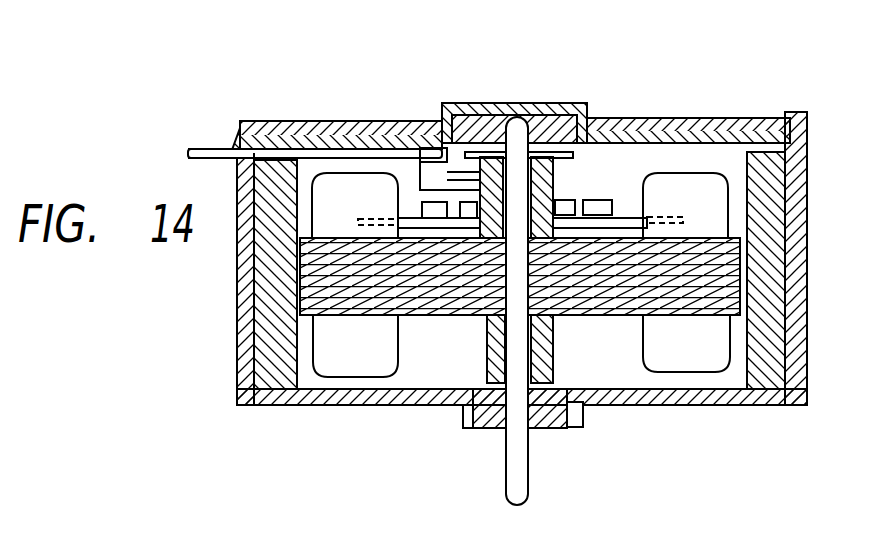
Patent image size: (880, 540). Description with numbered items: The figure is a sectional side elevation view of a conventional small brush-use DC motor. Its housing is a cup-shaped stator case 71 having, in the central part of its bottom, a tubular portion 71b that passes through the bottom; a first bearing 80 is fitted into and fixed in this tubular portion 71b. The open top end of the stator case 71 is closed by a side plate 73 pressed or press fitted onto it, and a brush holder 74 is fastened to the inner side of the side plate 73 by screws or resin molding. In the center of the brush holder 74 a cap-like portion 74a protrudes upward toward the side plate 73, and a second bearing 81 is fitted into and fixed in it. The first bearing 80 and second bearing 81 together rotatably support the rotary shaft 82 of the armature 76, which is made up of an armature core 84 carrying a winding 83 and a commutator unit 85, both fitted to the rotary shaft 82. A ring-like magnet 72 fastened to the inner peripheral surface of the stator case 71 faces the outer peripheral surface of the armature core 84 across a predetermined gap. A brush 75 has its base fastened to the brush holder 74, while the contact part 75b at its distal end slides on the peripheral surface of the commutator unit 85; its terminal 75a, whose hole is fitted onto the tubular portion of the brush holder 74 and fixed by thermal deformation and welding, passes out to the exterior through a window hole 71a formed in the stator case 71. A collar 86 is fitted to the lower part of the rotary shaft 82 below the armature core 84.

The stator case 71 is at (236, 420).
The window hole 71a is at (256, 152).
The tubular portion 71b is at (584, 416).
The ring-like magnet 72 is at (278, 372).
The side plate 73 is at (360, 122).
The brush holder 74 is at (231, 130).
The cap-like portion 74a is at (580, 120).
The brush 75 is at (204, 138).
The terminal 75a is at (190, 152).
The contact part 75b is at (445, 160).
The armature 76 is at (696, 152).
The first bearing 80 is at (494, 416).
The second bearing 81 is at (553, 103).
The rotary shaft 82 is at (533, 488).
The winding 83 is at (713, 362).
The armature core 84 is at (630, 315).
The commutator unit 85 is at (570, 180).
The collar 86 is at (490, 355).